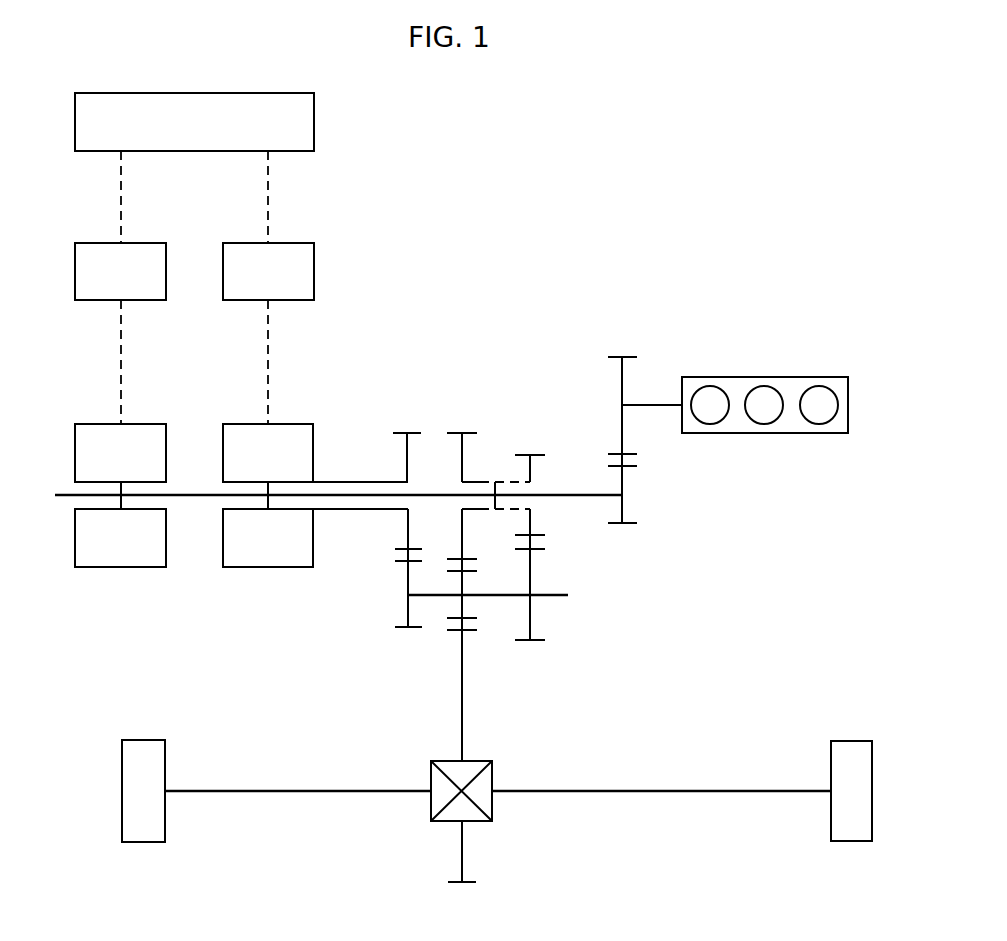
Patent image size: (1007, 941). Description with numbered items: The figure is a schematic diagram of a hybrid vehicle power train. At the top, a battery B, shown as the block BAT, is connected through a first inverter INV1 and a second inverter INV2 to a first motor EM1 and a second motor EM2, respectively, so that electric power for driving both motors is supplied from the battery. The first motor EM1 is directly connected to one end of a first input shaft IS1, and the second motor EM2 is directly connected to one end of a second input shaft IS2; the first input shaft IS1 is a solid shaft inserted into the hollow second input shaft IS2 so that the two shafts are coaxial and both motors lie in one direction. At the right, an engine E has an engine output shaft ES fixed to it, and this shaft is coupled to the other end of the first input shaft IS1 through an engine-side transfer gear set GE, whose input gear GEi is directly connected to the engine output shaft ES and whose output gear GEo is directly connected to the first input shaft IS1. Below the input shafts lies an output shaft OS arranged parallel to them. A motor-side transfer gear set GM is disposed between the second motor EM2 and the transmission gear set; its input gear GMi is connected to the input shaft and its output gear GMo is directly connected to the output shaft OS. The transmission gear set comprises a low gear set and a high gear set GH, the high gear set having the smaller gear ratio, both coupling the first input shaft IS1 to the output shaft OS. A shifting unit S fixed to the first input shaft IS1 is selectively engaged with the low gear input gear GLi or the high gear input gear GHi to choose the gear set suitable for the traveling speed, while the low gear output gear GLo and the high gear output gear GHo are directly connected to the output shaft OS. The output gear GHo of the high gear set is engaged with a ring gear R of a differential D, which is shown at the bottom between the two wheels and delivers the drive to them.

The battery B is at (314, 121).
The battery BAT is at (191, 124).
The inverter INV1 is at (120, 271).
The inverter INV2 is at (268, 271).
The first motor EM1 is at (120, 495).
The second motor EM2 is at (268, 495).
The first input shaft IS1 is at (62, 490).
The second input shaft IS2 is at (352, 509).
The motor-side transfer gear set GM is at (404, 415).
The input gear of the motor-side transfer gear set GMi is at (407, 458).
The output gear of the motor-side transfer gear set GMo is at (407, 612).
The high gear set GH is at (472, 415).
The input gear of the high gear set GHi is at (462, 457).
The output gear of the high gear set GHo is at (462, 605).
The input gear of the low gear set GLi is at (530, 468).
The output gear of the low gear set GLo is at (530, 569).
The shifting unit S is at (497, 480).
The engine-side transfer gear set GE is at (622, 340).
The input gear of the engine-side transfer gear set GEi is at (623, 379).
The output gear of the engine-side transfer gear set GEo is at (625, 506).
The engine output shaft ES is at (652, 407).
The engine E is at (810, 377).
The output shaft OS is at (556, 596).
The ring gear R is at (460, 708).
The differential D is at (492, 812).